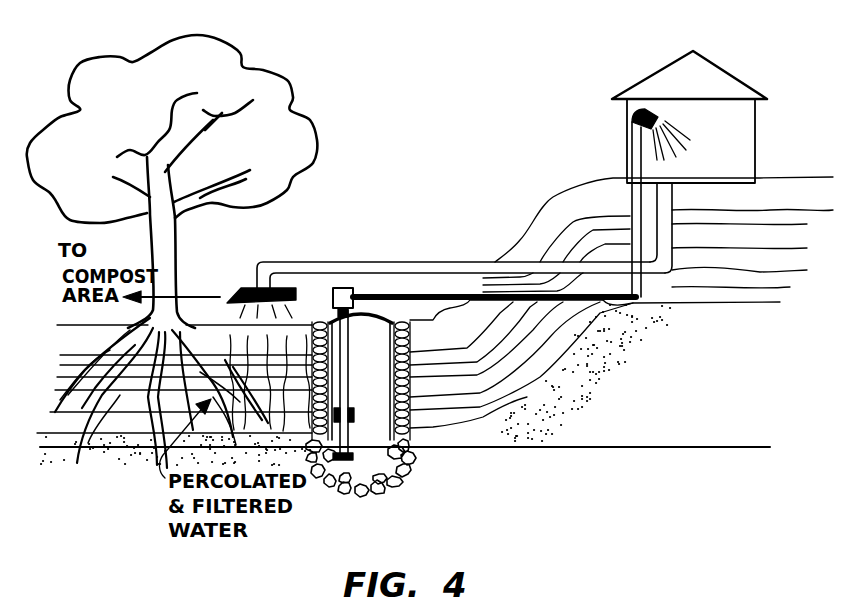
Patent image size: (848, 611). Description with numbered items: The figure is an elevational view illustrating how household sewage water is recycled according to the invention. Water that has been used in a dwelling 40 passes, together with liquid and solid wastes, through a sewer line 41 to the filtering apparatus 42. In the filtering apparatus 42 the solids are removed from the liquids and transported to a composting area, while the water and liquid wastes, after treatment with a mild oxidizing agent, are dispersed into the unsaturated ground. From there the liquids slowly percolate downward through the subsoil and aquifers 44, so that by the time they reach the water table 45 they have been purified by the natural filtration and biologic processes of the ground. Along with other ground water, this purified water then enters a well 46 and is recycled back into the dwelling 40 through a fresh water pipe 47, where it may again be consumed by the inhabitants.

The dwelling 40 is at (743, 80).
The sewer line 41 is at (674, 198).
The filtering apparatus 42 is at (232, 289).
The subsoil and aquifers 44 is at (143, 432).
The water table 45 is at (633, 447).
The well 46 is at (382, 378).
The fresh water pipe 47 is at (383, 290).